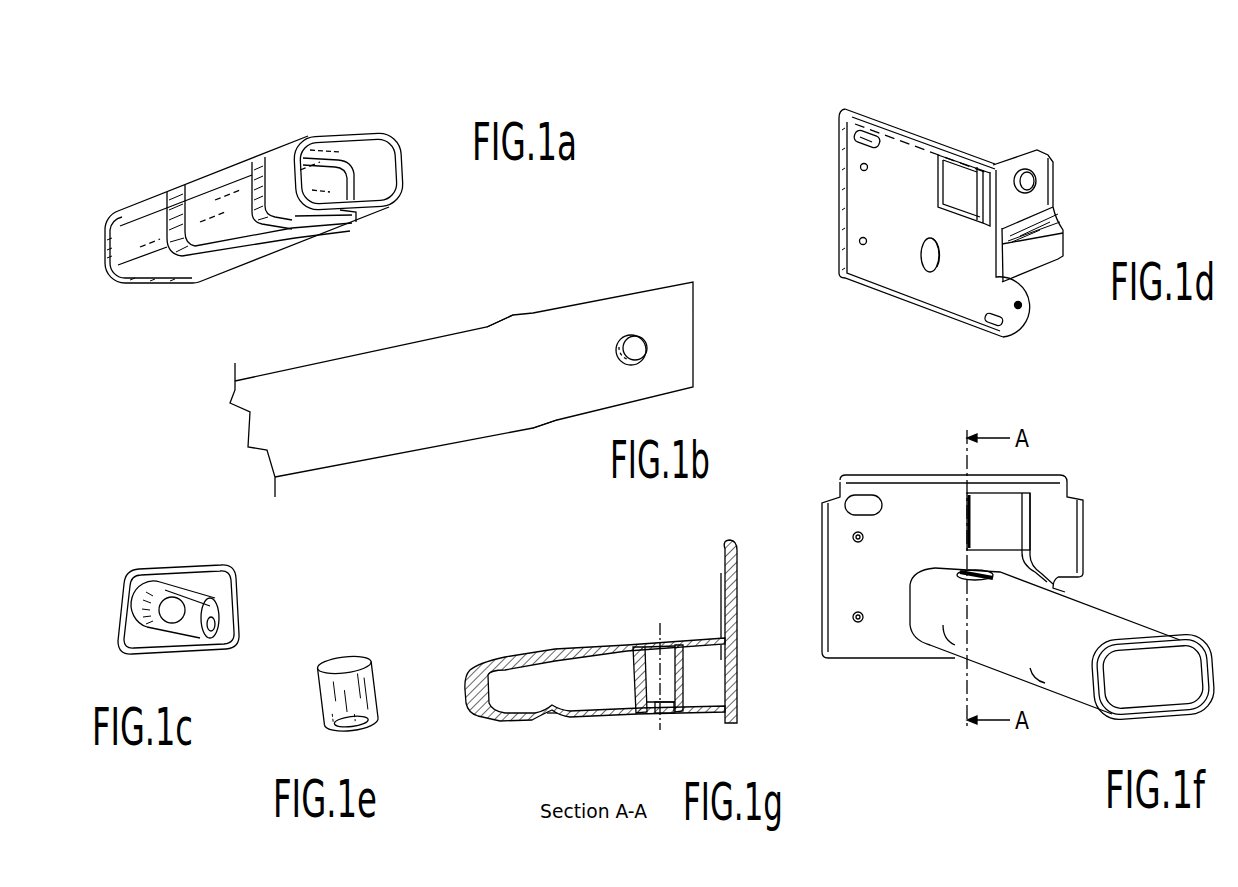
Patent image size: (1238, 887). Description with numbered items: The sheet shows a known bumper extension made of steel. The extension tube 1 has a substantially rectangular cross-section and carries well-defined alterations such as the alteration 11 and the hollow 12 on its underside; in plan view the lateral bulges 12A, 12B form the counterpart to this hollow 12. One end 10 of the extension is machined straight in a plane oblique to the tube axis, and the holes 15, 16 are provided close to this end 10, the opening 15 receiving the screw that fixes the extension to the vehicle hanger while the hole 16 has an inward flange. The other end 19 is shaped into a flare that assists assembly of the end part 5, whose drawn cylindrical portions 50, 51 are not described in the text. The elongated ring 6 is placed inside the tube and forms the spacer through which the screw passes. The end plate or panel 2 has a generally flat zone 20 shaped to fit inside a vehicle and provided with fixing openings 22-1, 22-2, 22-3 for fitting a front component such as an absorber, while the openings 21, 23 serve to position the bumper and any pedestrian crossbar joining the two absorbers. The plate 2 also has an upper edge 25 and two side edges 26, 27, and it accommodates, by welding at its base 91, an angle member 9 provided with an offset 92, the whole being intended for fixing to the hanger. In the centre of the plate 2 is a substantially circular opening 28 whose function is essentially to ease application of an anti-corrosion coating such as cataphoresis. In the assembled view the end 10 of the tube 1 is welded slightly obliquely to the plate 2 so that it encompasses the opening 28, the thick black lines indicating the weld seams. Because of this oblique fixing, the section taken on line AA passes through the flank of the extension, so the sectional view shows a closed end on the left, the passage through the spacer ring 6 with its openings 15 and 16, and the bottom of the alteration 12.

In FIG. 1A, the extension tube 1 is at (212, 165).
In FIG. 1B, the extension tube 1 is at (640, 290).
In FIG. 1F, the extension tube 1 is at (1127, 613).
In FIG. 1G, the extension tube 1 is at (504, 653).
In FIG. 1D, the end plate or panel 2 is at (941, 218).
In FIG. 1F, the end plate or panel 2 is at (977, 523).
In FIG. 1G, the end plate or panel 2 is at (744, 600).
In FIG. 1C, the seal plate 5 is at (245, 596).
In FIG. 1E, the ring 6 is at (319, 692).
In FIG. 1G, the ring 6 is at (633, 673).
In FIG. 1D, the angle member 9 is at (1054, 180).
In FIG. 1A, the end of the extension 10 is at (405, 148).
In FIG. 1A, the alteration 11 is at (170, 193).
In FIG. 1A, the hollow (alteration) 12 is at (303, 234).
In FIG. 1G, the hollow (alteration) 12 is at (555, 720).
In FIG. 1A, the lateral bulge 12A is at (252, 160).
In FIG. 1B, the lateral bulge 12A is at (511, 316).
In FIG. 1B, the lateral bulge 12B is at (533, 430).
In FIG. 1A, the hole (opening) 15 is at (334, 133).
In FIG. 1B, the hole (opening) 15 is at (615, 333).
In FIG. 1G, the hole (opening) 15 is at (659, 645).
In FIG. 1A, the hole 16 is at (354, 221).
In FIG. 1G, the hole 16 is at (656, 717).
In FIG. 1A, the other end 19 is at (104, 238).
In FIG. 1D, the flat zone 20 is at (888, 218).
In FIG. 1D, the opening 21 is at (863, 134).
In FIG. 1D, the fixing opening 22-1 is at (860, 166).
In FIG. 1D, the fixing opening 22-2 is at (860, 240).
In FIG. 1D, the fixing opening 22-3 is at (1021, 305).
In FIG. 1D, the opening 23 is at (992, 324).
In FIG. 1D, the upper edge 25 is at (924, 146).
In FIG. 1D, the side edge 26 is at (843, 250).
In FIG. 1F, the side edge 27 is at (1085, 530).
In FIG. 1D, the substantially circular opening 28 is at (933, 272).
In FIG. 1C, the cylindrical element 50 is at (194, 609).
In FIG. 1C, the knurled ring 51 is at (164, 603).
In FIG. 1D, the base 91 is at (958, 180).
In FIG. 1D, the offset 92 is at (1063, 232).